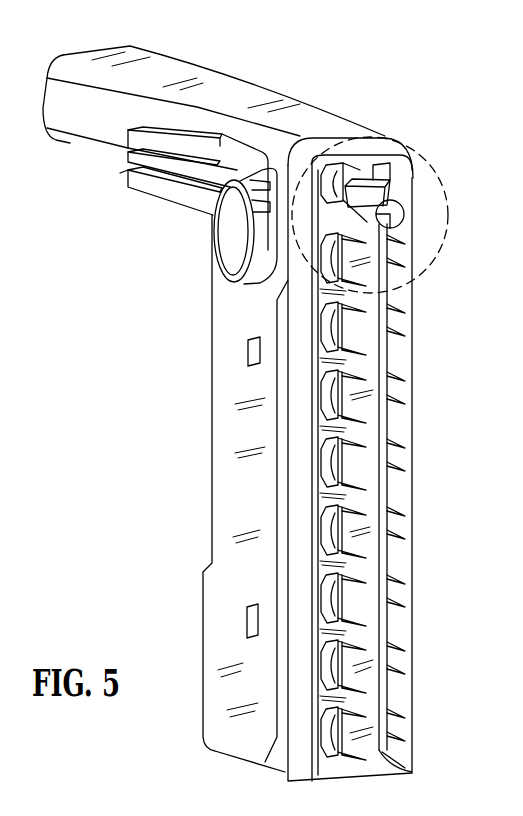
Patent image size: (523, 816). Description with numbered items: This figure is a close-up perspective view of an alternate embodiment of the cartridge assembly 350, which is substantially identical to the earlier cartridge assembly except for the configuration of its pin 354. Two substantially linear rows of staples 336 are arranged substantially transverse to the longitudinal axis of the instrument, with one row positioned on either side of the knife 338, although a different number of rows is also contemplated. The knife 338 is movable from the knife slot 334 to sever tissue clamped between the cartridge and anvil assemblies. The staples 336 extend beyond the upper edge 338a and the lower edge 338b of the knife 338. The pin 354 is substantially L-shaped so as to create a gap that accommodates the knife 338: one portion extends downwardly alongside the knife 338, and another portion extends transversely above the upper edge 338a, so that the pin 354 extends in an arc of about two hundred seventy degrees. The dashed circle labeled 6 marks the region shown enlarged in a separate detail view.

The cartridge assembly 350 is at (313, 98).
The housing body 334 is at (281, 461).
The lancet carriers 336 is at (327, 348).
The guide rail 338 is at (419, 436).
The first end of guide rail 338a is at (368, 176).
The second end of guide rail 338b is at (413, 773).
The ball detent 354 is at (392, 215).
The detail area of FIG. 6 is at (432, 252).